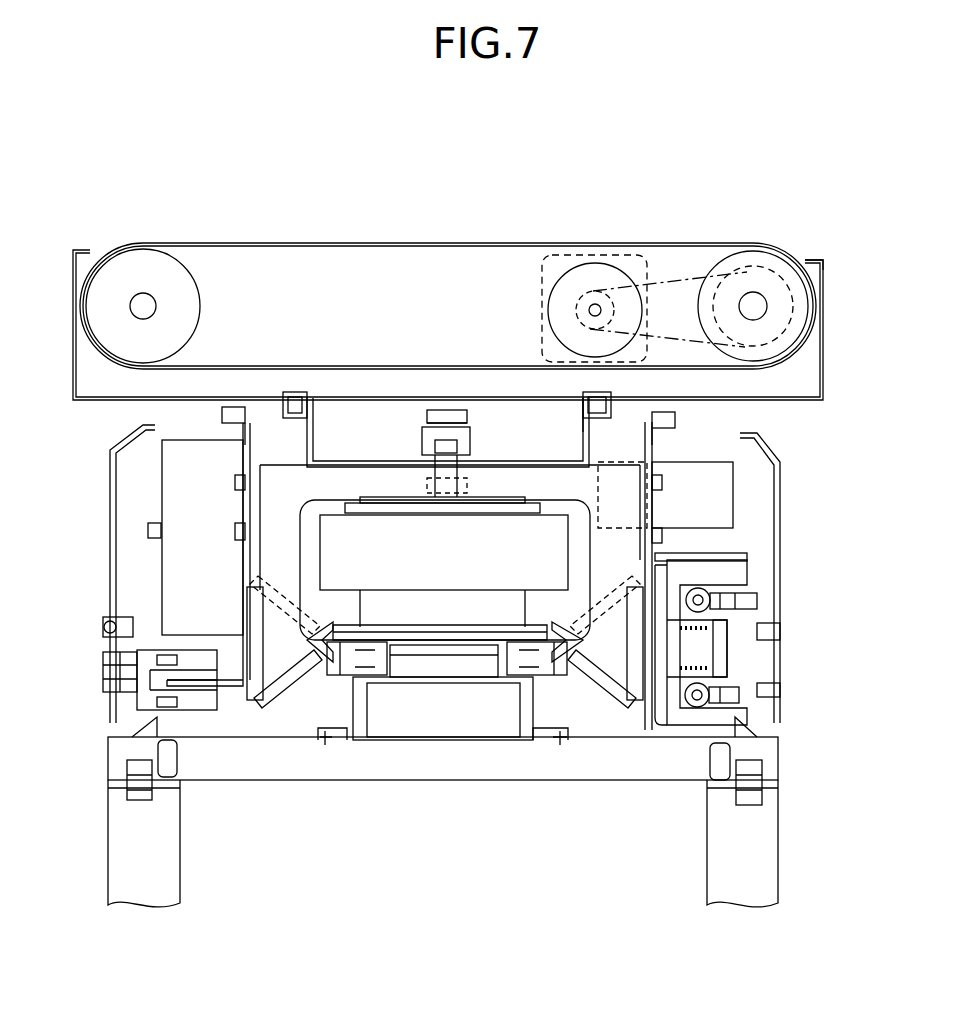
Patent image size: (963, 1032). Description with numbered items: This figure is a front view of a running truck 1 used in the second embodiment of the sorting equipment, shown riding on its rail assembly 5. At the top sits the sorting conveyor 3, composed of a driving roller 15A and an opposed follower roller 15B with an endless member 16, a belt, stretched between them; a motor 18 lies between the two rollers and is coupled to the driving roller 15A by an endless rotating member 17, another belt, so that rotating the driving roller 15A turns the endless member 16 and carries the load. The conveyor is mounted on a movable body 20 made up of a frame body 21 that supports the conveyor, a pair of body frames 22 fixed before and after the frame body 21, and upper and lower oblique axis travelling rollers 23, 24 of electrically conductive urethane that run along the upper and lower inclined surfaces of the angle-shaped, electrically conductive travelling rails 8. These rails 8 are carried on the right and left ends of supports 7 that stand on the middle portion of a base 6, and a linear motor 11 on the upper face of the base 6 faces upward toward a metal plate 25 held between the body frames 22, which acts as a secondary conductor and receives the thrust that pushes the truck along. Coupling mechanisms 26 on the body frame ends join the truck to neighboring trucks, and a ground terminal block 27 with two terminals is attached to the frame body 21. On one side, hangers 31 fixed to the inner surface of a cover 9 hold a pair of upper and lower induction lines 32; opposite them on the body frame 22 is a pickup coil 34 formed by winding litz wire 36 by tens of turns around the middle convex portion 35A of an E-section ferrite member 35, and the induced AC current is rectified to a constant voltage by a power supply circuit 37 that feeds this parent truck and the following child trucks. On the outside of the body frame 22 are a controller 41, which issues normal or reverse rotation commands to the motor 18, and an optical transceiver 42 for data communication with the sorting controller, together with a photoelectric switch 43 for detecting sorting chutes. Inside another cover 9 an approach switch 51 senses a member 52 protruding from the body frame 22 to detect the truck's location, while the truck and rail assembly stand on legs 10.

The running truck 1 is at (815, 232).
The sorting conveyor 3 is at (828, 290).
The rail assembly 5 is at (801, 625).
The base 6 is at (430, 772).
The support 7 is at (520, 705).
The travelling rail 8 is at (345, 753).
The cover 9 is at (112, 615).
The leg 10 is at (118, 838).
The linear motor 11 is at (545, 553).
The driving roller 15A is at (760, 262).
The follower roller 15B is at (135, 258).
The endless member 16 is at (347, 243).
The endless rotating member 17 is at (665, 278).
The motor 18 is at (548, 258).
The movable body 20 is at (680, 455).
The frame body 21 is at (290, 390).
The body frame 22 is at (268, 505).
The oblique axis travelling roller 23 is at (330, 612).
The oblique axis travelling roller 24 is at (292, 722).
The metal plate 25 is at (380, 513).
The coupling mechanism 26 is at (472, 438).
The ground terminal block 27 is at (576, 432).
The hanger 31 is at (745, 605).
The induction line 32 is at (707, 592).
The pickup coil 34 is at (733, 552).
The ferrite member 35 is at (688, 572).
The middle convex portion 35A is at (637, 722).
The litz wire 36 is at (683, 722).
The power supply circuit 37 is at (715, 490).
The controller 41 is at (175, 567).
The optical transceiver 42 is at (148, 532).
The photoelectric switch 43 is at (222, 413).
The approach switch 51 is at (110, 683).
The member to be detected 52 is at (232, 722).